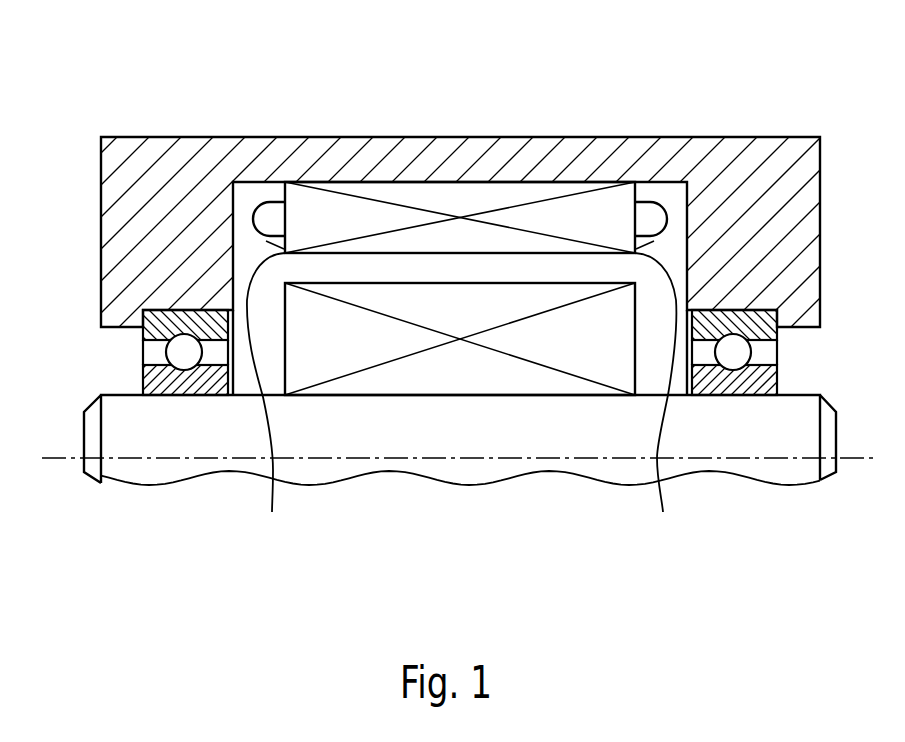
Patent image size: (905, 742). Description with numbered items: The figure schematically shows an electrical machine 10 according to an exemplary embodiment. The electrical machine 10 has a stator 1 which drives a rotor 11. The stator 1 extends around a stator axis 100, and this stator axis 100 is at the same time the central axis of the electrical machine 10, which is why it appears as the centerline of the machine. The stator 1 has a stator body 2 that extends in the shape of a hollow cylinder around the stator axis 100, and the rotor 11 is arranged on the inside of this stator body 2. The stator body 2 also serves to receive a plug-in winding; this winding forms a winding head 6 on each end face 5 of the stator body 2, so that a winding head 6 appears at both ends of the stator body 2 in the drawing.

The electrical machine 10 is at (105, 76).
The stator 1 is at (460, 367).
The stator body 2 is at (454, 196).
The end face 5 is at (462, 403).
The winding head 6 is at (270, 217).
The rotor 11 is at (497, 378).
The stator axis 100 is at (186, 458).